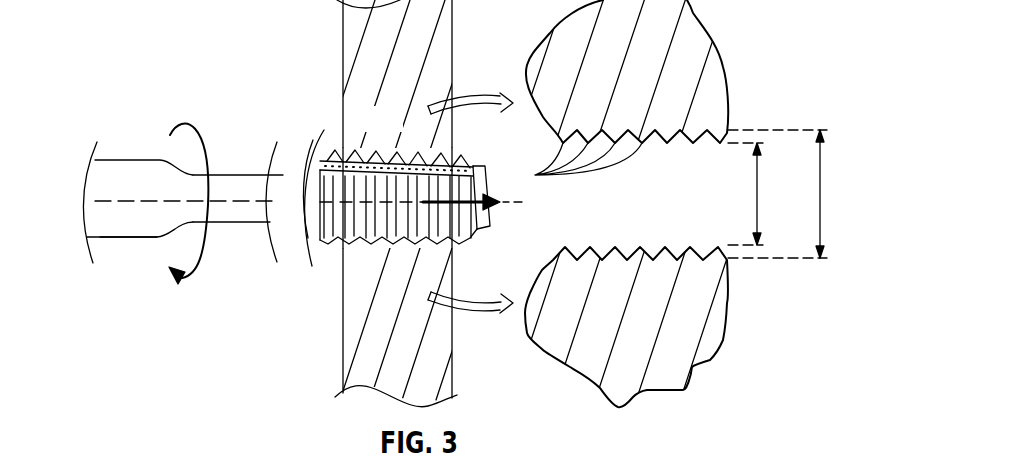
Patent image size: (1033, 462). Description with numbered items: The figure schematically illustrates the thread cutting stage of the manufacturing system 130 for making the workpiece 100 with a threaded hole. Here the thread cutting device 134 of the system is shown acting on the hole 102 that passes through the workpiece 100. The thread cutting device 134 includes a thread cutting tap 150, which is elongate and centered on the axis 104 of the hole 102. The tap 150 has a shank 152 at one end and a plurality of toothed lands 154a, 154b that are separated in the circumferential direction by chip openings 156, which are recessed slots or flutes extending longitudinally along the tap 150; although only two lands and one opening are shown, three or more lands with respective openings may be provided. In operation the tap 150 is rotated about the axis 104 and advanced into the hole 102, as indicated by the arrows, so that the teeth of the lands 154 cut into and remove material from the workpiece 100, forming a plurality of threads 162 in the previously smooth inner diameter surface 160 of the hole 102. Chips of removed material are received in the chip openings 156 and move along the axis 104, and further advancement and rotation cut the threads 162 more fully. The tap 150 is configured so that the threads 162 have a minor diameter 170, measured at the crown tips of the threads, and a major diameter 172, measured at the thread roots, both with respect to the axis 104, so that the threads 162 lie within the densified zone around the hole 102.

The workpiece 100 is at (438, 47).
The hole 102 is at (459, 242).
The axis 104 is at (522, 202).
The manufacturing system 130 is at (160, 50).
The thread cutting device 134 is at (264, 170).
The thread cutting tap 150 is at (323, 242).
The shank 152 is at (155, 226).
The toothed lands 154 is at (193, 282).
The toothed land 154a is at (322, 158).
The toothed land 154b is at (353, 161).
The chip opening 156 is at (410, 162).
The inner diameter surface 160 is at (392, 242).
The threads 162 is at (535, 175).
The minor diameter 170 is at (757, 186).
The major diameter 172 is at (820, 180).